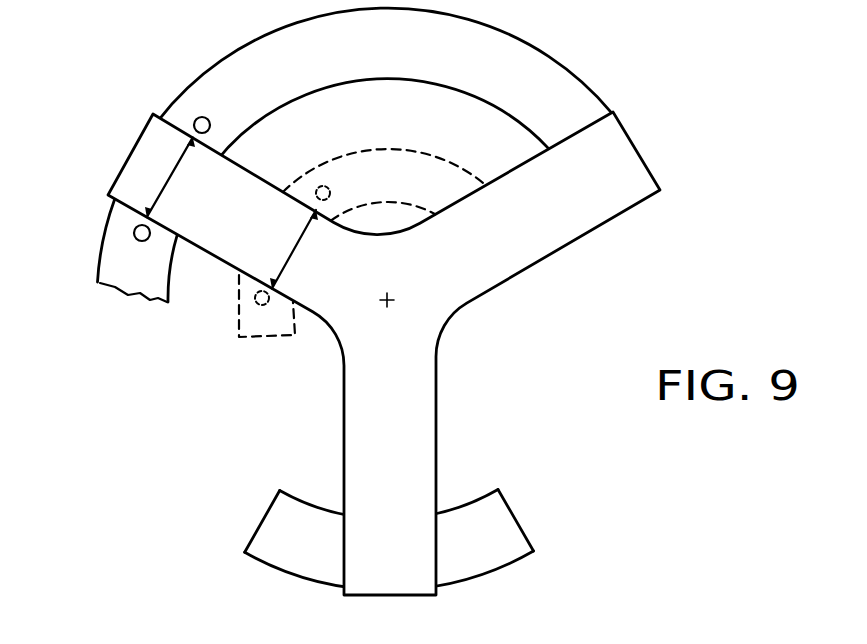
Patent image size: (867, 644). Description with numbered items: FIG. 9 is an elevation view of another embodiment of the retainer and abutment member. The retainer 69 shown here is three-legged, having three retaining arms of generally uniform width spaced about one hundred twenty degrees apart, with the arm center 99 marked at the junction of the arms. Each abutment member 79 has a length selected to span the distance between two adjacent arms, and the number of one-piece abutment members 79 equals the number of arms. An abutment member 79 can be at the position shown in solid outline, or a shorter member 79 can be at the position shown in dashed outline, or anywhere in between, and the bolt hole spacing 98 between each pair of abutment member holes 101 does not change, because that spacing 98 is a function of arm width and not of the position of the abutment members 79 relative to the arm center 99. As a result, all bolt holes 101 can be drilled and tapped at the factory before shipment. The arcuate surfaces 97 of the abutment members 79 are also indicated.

The retainer 69 is at (387, 170).
The abutment member 79 is at (502, 60).
The inner arcuate surface 97 is at (295, 498).
The bolt hole spacing 98 is at (172, 178).
The arm center 99 is at (392, 298).
The abutment member hole 101 is at (206, 117).